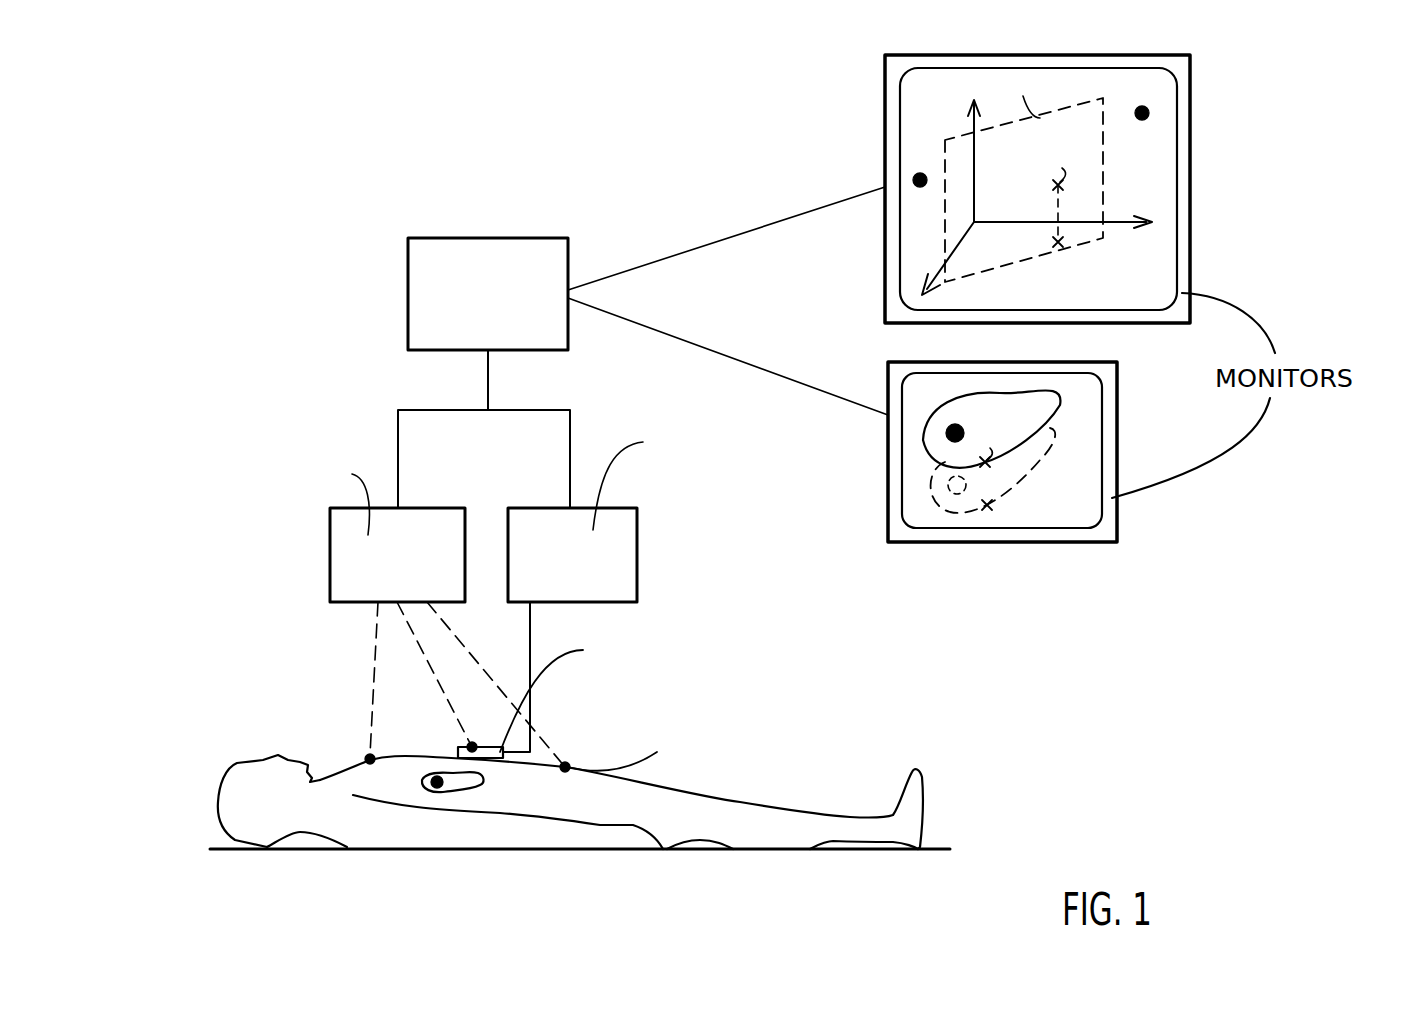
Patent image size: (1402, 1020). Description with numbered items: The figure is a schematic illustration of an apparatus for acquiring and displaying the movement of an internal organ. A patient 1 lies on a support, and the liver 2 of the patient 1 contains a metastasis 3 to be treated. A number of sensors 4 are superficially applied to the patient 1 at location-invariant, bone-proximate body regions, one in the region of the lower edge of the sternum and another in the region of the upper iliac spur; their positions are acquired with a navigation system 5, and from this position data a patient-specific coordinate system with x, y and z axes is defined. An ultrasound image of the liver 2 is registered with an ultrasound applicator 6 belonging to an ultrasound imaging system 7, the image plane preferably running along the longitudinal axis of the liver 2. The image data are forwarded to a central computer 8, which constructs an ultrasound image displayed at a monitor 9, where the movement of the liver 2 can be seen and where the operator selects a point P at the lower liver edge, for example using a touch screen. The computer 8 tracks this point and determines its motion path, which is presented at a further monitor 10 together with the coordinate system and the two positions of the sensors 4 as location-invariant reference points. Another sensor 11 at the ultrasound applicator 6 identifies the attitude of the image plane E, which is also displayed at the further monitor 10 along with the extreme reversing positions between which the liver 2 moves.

The patient 1 is at (328, 830).
The liver 2 is at (460, 788).
The metastasis 3 is at (430, 790).
The sensors 4 is at (368, 757).
The navigation system 5 is at (331, 538).
The ultrasound applicator 6 is at (490, 750).
The ultrasound imaging system 7 is at (637, 552).
The central computer 8 is at (445, 242).
The monitor 9 is at (1117, 416).
The further monitor 10 is at (1190, 195).
The sensor 11 is at (468, 745).